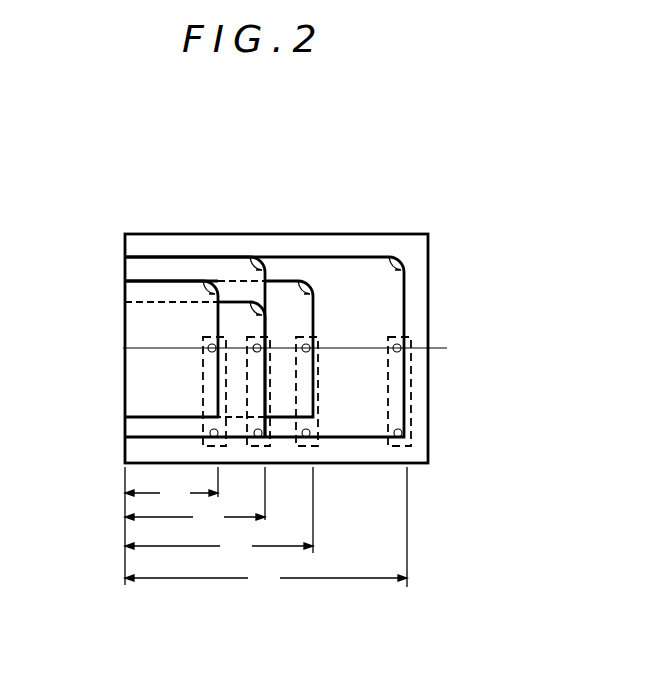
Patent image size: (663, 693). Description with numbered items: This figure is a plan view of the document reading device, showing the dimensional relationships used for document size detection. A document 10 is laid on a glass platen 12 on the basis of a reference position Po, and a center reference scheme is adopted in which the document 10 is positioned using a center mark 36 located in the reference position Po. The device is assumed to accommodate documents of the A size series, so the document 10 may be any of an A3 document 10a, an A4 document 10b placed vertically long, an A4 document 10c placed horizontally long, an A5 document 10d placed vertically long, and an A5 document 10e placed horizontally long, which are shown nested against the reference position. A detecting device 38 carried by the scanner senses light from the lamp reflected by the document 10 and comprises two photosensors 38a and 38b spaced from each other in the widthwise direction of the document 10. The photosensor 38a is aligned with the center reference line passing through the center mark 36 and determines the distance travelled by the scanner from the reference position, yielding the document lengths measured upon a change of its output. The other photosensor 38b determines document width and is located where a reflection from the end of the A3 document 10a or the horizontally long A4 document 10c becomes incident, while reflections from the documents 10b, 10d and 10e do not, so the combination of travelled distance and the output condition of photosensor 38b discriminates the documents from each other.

The document 10 is at (280, 407).
The A3 document 10a is at (368, 257).
The A4 document placed vertically long 10b is at (292, 281).
The A4 document placed horizontally long 10c is at (192, 257).
The A5 document placed vertically long 10d is at (240, 302).
The A5 document placed horizontally long 10e is at (171, 308).
The glass platen 12 is at (417, 234).
The center mark 36 is at (115, 348).
The detecting device 38 is at (412, 380).
The photosensor 38a is at (405, 335).
The photosensor 38b is at (413, 428).